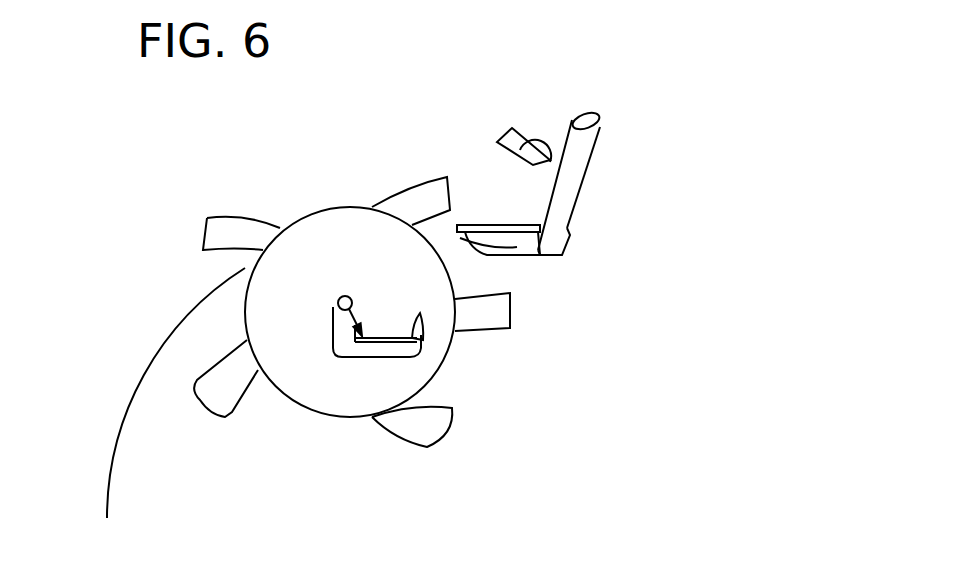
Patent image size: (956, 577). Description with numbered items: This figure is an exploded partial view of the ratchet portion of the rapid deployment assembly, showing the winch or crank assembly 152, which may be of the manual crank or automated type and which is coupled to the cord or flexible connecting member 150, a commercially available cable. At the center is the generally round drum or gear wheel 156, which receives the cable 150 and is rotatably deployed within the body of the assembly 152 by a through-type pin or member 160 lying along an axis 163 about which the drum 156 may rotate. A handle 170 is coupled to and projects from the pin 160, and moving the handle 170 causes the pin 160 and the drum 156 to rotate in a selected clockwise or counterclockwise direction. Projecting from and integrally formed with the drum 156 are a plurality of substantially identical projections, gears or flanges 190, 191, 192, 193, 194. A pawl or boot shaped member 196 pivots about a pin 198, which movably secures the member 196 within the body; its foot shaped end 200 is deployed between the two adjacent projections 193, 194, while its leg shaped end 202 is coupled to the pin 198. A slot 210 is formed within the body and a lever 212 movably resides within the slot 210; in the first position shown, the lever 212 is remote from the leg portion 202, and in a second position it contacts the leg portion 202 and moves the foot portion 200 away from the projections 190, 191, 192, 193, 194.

The cord or flexible connecting member 150 is at (113, 448).
The winch or crank assembly 152 is at (728, 92).
The drum or gear wheel 156 is at (387, 256).
The pin or member 160 is at (341, 297).
The axis 163 is at (355, 299).
The handle 170 is at (397, 347).
The projection, gear or flange 190 is at (222, 229).
The projection, gear or flange 191 is at (218, 397).
The projection, gear or flange 192 is at (412, 430).
The projection, gear or flange 193 is at (498, 313).
The projection, gear or flange 194 is at (413, 200).
The pawl or boot shaped member 196 is at (576, 180).
The pin 198 is at (583, 118).
The foot shaped end 200 is at (493, 238).
The leg shaped end 202 is at (592, 137).
The slot 210 is at (513, 130).
The lever 212 is at (532, 147).